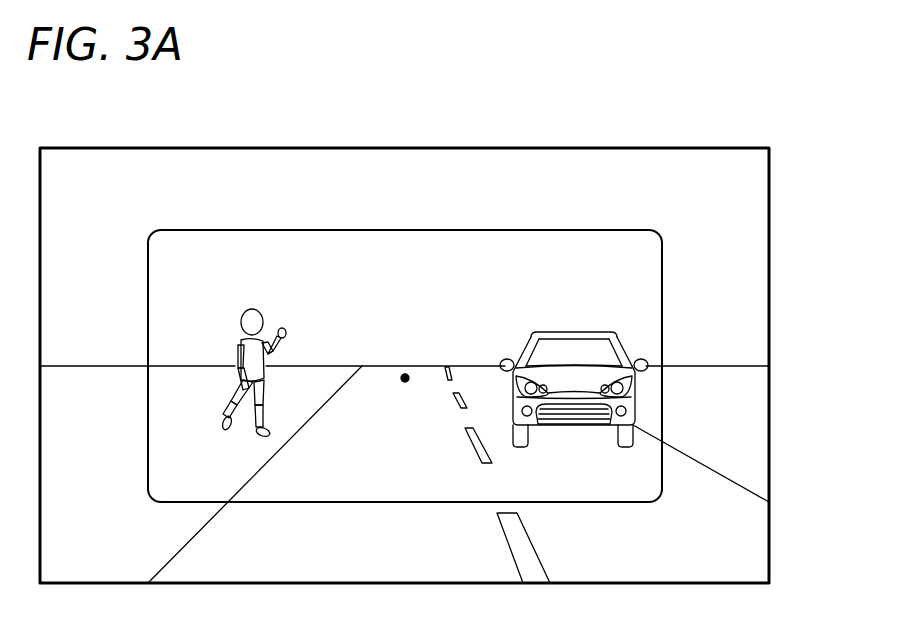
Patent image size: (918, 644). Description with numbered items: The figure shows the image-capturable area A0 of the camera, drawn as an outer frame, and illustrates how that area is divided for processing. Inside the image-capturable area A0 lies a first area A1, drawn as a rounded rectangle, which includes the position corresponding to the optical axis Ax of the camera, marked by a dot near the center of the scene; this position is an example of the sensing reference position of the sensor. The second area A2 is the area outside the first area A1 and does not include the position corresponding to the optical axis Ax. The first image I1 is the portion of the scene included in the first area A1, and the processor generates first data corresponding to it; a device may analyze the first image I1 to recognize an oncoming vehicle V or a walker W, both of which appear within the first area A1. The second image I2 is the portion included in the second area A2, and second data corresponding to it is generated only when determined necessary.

The image-capturable area A0 is at (770, 204).
The first area A1 is at (433, 252).
The second area A2 is at (751, 297).
The first image I1 is at (352, 266).
The second image I2 is at (726, 405).
The optical axis Ax is at (405, 374).
The walker W is at (225, 308).
The oncoming vehicle V is at (586, 316).